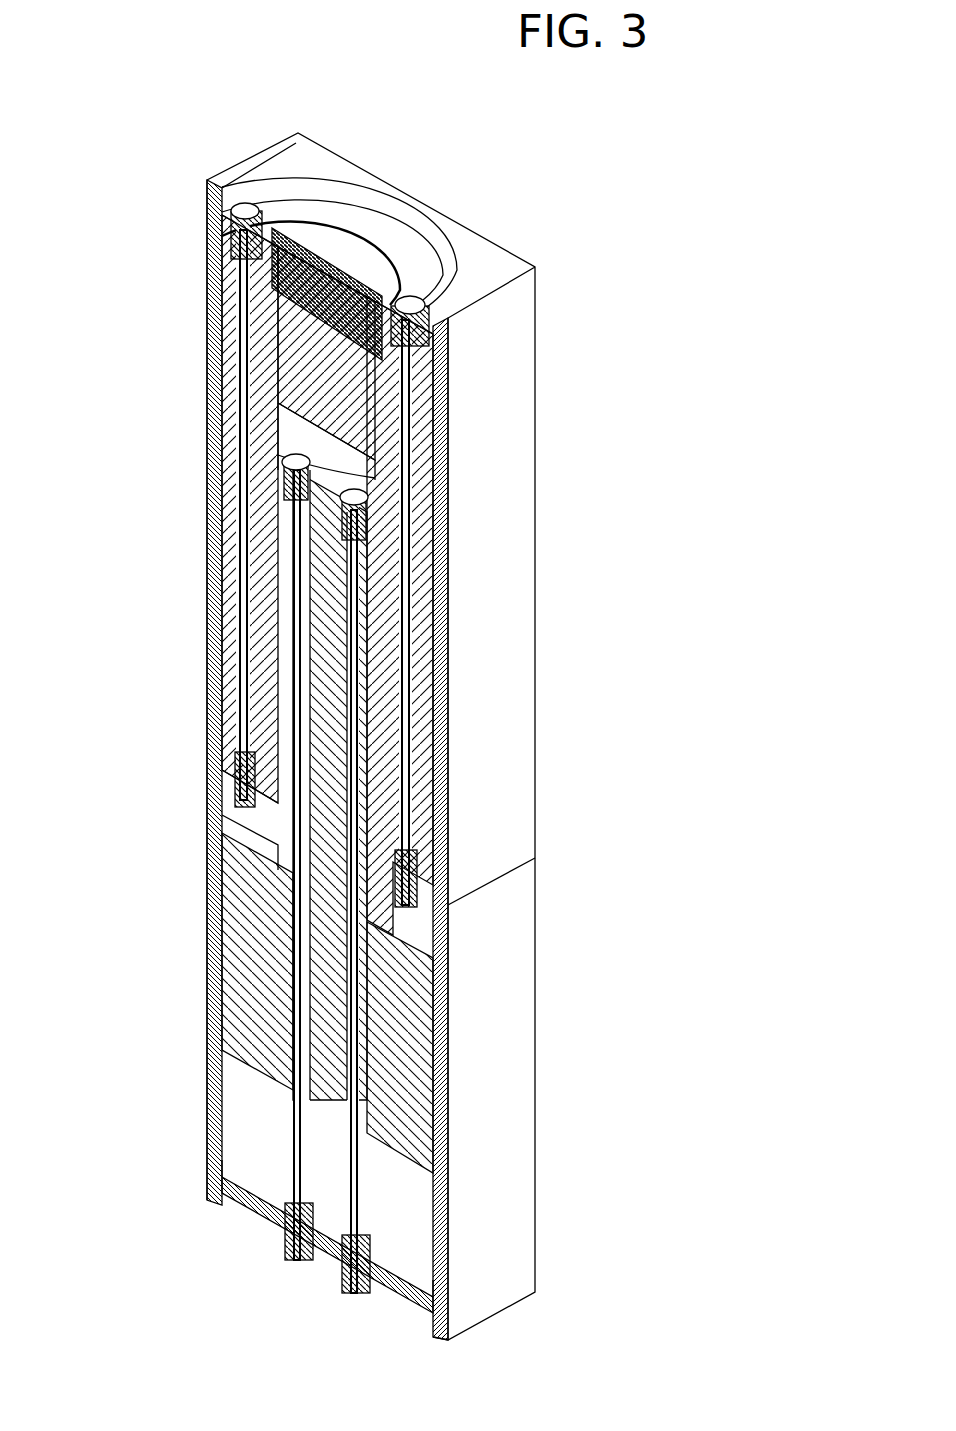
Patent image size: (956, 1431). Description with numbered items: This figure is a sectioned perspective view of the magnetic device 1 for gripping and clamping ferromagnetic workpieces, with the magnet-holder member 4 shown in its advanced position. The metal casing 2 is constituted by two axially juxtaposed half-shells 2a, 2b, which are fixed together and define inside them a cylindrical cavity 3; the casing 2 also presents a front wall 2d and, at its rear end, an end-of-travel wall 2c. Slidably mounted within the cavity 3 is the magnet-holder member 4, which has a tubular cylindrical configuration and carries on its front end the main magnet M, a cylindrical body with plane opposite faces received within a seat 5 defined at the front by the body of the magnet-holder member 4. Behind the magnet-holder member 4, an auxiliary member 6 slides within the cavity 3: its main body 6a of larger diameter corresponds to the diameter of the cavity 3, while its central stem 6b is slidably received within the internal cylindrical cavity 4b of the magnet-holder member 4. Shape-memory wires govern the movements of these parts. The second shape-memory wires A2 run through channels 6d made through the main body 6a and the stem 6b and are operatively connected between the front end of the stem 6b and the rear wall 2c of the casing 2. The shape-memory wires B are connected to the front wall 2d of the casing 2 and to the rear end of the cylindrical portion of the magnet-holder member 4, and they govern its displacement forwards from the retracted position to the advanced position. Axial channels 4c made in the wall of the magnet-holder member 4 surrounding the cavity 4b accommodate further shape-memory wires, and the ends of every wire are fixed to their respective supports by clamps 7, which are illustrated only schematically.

The magnetic device 1 is at (730, 502).
The casing 2 is at (378, 736).
The half-shell 2a is at (503, 407).
The half-shell 2b is at (507, 1160).
The end-of-travel wall 2c is at (265, 1193).
The front wall 2d is at (427, 263).
The cylindrical cavity 3 is at (243, 1108).
The magnet-holder member 4 is at (304, 575).
The internal cylindrical cavity 4b is at (287, 432).
The axial channels 4c is at (240, 645).
The seat 5 is at (273, 283).
The auxiliary member 6 is at (290, 881).
The main body 6a is at (233, 953).
The central stem 6b is at (325, 612).
The channels 6d is at (290, 995).
The clamps 7 is at (253, 215).
The second shape-memory wires A2 is at (295, 1143).
The shape-memory wires B is at (243, 313).
The main magnet M is at (423, 277).